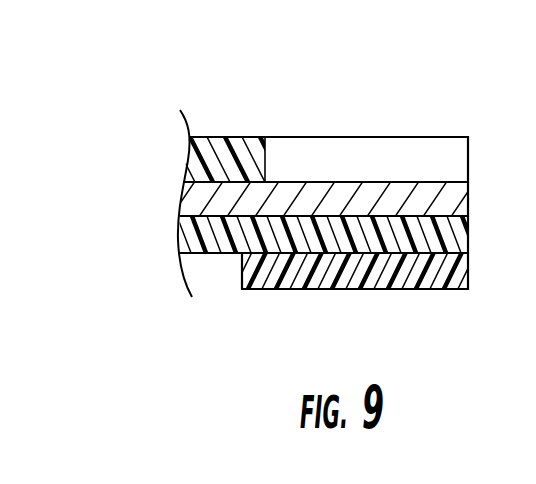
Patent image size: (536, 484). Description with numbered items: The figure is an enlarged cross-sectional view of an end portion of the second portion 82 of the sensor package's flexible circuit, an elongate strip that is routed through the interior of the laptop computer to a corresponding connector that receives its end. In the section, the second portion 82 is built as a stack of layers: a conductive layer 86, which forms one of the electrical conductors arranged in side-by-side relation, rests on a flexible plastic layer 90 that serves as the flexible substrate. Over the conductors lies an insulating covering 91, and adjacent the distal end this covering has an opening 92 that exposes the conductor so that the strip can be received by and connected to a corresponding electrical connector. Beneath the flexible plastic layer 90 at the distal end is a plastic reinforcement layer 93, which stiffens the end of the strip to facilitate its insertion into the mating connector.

The second portion 82 is at (205, 137).
The conductive layer 86 is at (462, 198).
The flexible plastic layer 90 is at (193, 233).
The insulating covering 91 is at (228, 137).
The opening 92 is at (297, 155).
The plastic reinforcement layer 93 is at (295, 277).